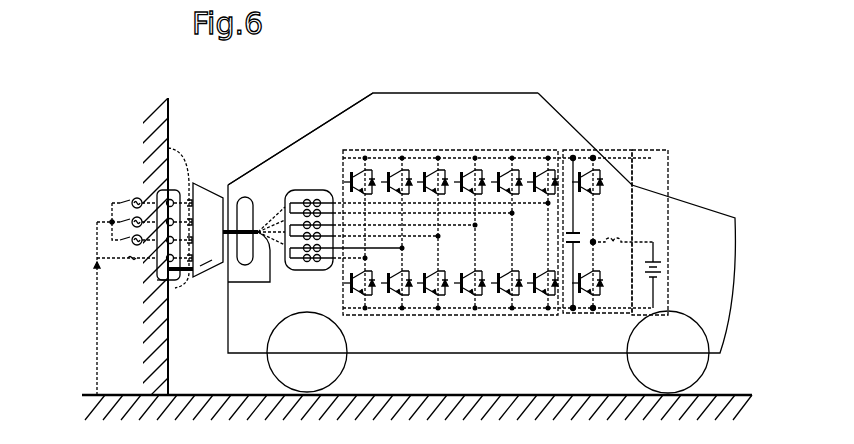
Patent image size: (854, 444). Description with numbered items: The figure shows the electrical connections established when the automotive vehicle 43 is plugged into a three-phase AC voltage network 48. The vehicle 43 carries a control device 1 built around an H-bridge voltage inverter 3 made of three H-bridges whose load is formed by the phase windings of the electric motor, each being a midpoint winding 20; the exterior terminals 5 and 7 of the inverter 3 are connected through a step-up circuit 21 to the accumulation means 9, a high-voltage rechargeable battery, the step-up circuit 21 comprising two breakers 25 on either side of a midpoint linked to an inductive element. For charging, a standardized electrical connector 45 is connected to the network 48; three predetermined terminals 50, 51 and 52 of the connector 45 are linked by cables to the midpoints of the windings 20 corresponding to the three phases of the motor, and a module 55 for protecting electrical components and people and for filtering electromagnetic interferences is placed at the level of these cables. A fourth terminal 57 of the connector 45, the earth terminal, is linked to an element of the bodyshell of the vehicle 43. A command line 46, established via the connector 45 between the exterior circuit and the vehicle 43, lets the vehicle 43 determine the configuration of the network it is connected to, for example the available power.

The control device 1 is at (498, 138).
The H-bridge voltage inverter 3 is at (452, 150).
The exterior terminal 5 is at (365, 158).
The exterior terminal 7 is at (367, 310).
The accumulation means 9 is at (655, 150).
The midpoint winding 20 is at (303, 190).
The step-up circuit 21 is at (615, 148).
The breaker 25 is at (590, 158).
The automotive vehicle 43 is at (347, 107).
The electrical connector 45 is at (213, 185).
The command line 46 is at (157, 280).
The network 48 is at (57, 91).
The predetermined terminal 50 is at (167, 150).
The predetermined terminal 51 is at (157, 225).
The predetermined terminal 52 is at (212, 270).
The protection and filtering module 55 is at (243, 196).
The fourth terminal 57 is at (200, 287).